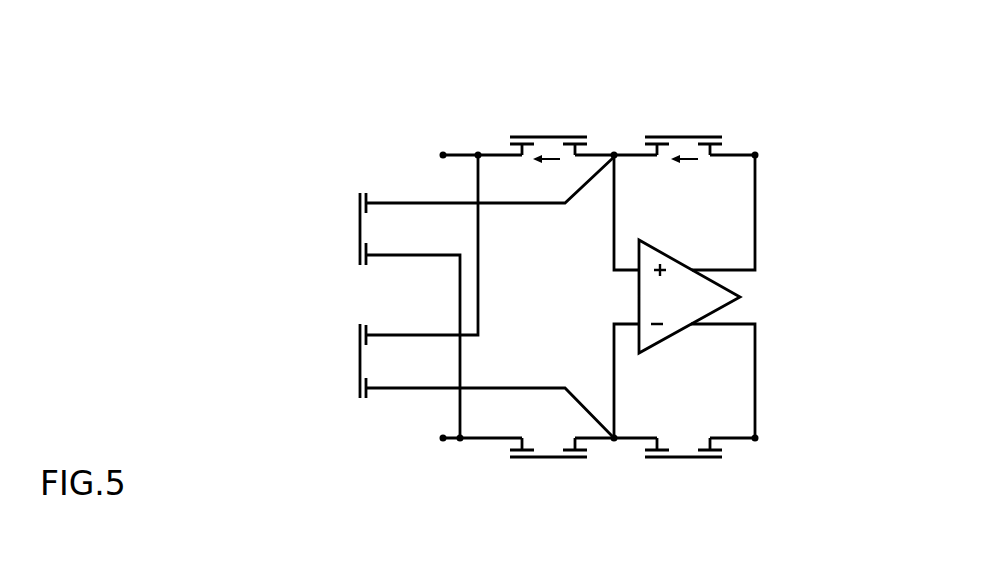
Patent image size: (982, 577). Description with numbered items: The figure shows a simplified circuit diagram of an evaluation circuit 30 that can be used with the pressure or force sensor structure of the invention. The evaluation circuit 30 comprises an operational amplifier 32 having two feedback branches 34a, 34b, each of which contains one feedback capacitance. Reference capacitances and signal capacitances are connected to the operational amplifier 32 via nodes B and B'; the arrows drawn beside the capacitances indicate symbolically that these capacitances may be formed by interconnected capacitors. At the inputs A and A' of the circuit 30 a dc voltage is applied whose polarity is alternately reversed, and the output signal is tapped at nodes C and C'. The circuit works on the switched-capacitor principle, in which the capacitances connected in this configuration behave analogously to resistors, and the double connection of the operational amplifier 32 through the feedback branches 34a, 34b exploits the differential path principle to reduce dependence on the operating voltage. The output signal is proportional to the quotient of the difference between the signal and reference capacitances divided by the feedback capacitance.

The evaluation circuit 30 is at (796, 133).
The operational amplifier 32 is at (730, 290).
The feedback branch 34a is at (756, 215).
The feedback branch 34b is at (756, 388).